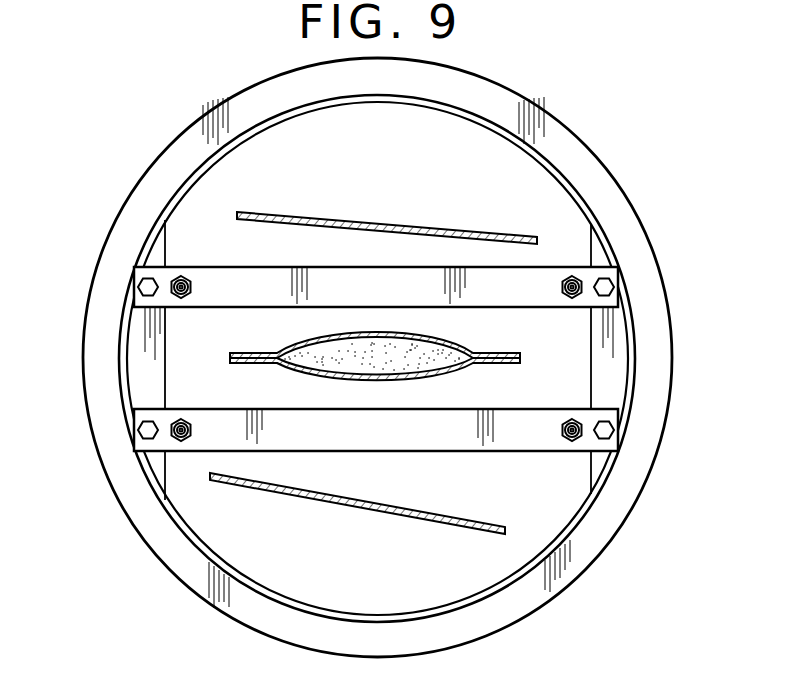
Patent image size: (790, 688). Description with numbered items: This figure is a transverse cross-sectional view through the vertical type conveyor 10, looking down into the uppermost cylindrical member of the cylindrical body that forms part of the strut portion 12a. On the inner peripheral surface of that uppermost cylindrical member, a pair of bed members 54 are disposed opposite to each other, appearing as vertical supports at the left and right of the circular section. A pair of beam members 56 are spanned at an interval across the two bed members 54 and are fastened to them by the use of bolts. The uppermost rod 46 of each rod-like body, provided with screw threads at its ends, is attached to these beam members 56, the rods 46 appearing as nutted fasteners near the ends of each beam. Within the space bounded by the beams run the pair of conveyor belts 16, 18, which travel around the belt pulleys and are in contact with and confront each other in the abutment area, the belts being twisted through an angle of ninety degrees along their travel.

The vertical type conveyor 10 is at (698, 300).
The strut portion 12a is at (588, 146).
The conveyor belt 16 is at (462, 350).
The conveyor belt 18 is at (371, 509).
The rod 46 is at (572, 442).
The bed member 54 is at (591, 383).
The beam member 56 is at (473, 451).